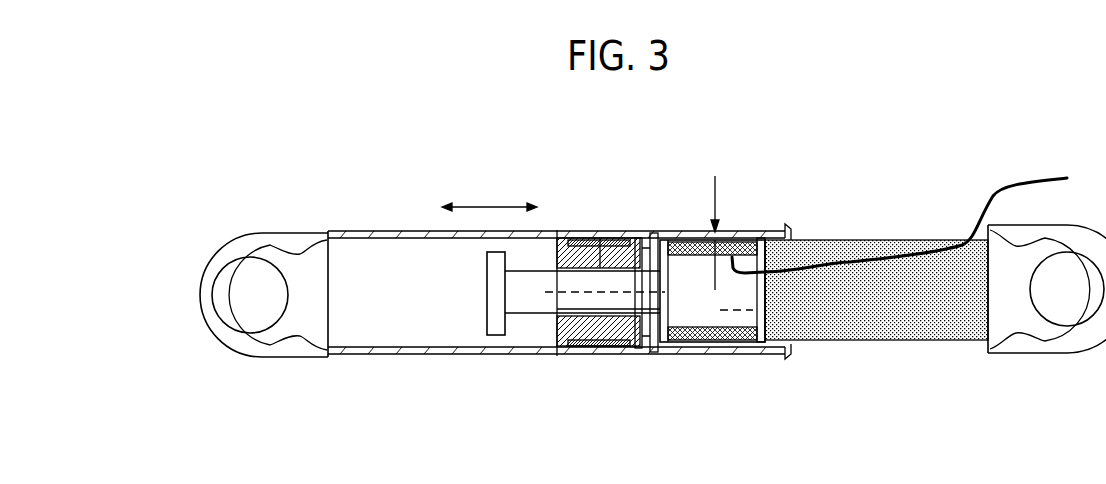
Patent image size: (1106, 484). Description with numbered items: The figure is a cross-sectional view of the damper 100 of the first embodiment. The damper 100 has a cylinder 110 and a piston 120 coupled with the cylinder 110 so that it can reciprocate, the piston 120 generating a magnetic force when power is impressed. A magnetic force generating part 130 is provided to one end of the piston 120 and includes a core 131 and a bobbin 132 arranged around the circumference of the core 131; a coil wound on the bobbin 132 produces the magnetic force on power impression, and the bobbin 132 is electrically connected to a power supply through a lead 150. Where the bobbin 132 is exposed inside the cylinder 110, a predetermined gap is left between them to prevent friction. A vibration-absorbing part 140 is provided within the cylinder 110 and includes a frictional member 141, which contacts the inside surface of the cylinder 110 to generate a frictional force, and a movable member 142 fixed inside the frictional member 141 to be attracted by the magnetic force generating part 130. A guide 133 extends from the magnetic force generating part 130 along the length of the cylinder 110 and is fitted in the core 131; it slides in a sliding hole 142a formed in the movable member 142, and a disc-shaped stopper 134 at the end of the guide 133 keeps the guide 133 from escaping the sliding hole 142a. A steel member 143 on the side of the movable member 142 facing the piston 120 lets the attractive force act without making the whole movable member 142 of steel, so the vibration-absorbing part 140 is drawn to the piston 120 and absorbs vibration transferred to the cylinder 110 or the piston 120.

The damper 100 is at (932, 116).
The cylinder 110 is at (413, 232).
The piston 120 is at (875, 247).
The magnetic force generating part 130 is at (788, 428).
The core 131 is at (773, 320).
The bobbin 132 is at (720, 343).
The guide 133 is at (527, 302).
The stopper 134 is at (492, 276).
The vibration-absorbing part 140 is at (668, 428).
The frictional member 141 is at (600, 347).
The movable member 142 is at (648, 330).
The sliding hole 142a is at (593, 238).
The steel member 143 is at (654, 234).
The lead 150 is at (1022, 187).